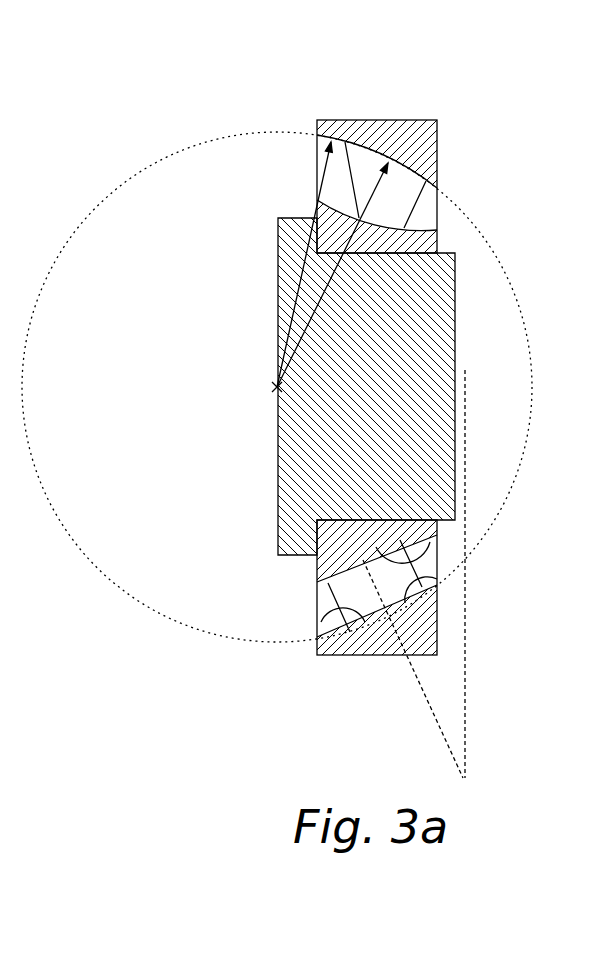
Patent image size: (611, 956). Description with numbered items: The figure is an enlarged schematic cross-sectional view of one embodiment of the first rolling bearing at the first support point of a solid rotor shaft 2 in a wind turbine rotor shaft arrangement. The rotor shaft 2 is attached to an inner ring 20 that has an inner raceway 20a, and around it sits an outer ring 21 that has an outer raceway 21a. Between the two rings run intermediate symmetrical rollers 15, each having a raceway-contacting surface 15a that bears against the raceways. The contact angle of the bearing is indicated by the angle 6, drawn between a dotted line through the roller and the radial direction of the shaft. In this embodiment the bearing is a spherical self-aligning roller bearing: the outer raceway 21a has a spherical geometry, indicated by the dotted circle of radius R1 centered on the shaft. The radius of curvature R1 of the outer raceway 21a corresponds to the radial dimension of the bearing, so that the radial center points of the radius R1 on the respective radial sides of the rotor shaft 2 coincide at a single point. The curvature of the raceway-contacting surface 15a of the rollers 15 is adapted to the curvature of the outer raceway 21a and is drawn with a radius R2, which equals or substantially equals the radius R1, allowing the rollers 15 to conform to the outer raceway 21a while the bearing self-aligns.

The rotor shaft 2 is at (440, 380).
The outer ring 21 is at (395, 128).
The rollers 15 is at (397, 193).
The inner ring 20 is at (330, 232).
The radius of curvature of the outer raceway R1 is at (294, 312).
The radius of the raceway-contacting surface of the rollers R2 is at (300, 343).
The inner raceway 20a is at (410, 562).
The outer raceway 21a is at (440, 577).
The raceway-contacting surface 15a is at (321, 622).
The contact angle 6 is at (445, 728).